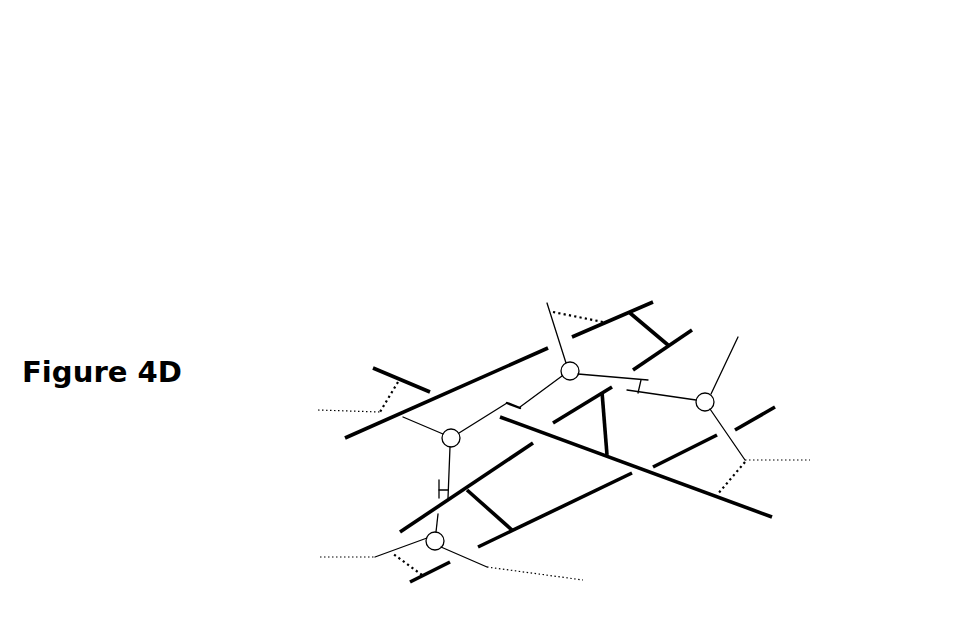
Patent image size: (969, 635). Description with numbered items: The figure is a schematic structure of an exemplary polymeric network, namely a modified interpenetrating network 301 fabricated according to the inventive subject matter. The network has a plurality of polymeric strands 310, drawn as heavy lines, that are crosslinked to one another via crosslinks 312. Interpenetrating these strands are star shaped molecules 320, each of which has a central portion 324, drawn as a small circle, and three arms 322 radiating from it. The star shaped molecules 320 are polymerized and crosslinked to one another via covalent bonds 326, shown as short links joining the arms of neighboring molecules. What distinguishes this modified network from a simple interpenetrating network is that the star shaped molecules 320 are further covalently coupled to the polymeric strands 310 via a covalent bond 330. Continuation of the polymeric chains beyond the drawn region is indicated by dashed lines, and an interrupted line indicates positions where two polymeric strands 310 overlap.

The modified interpenetrating network 301 is at (623, 153).
The polymeric strands 310 is at (630, 313).
The crosslinks 312 is at (657, 323).
The star shaped molecules 320 is at (740, 393).
The arms 322 is at (728, 348).
The central portion 324 is at (700, 394).
The covalent bonds 326 is at (516, 408).
The covalent bond 330 is at (582, 318).